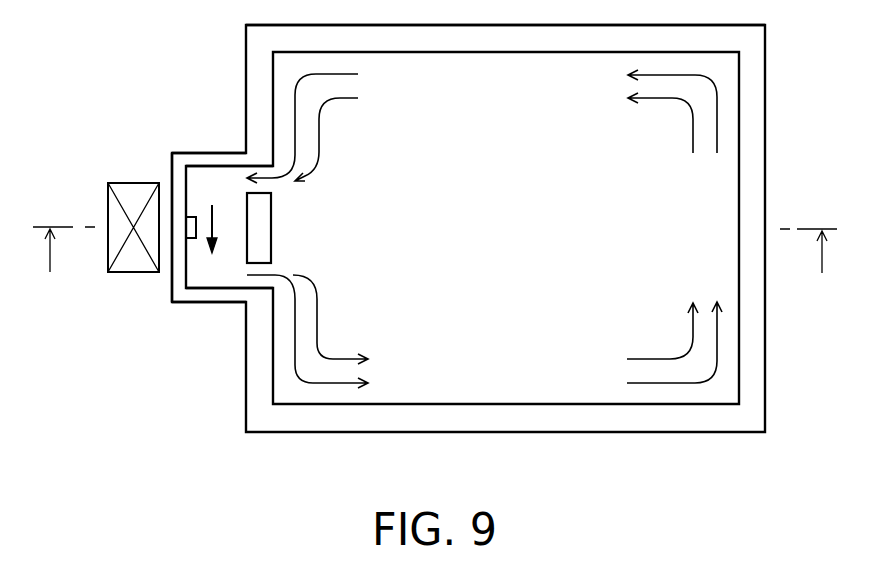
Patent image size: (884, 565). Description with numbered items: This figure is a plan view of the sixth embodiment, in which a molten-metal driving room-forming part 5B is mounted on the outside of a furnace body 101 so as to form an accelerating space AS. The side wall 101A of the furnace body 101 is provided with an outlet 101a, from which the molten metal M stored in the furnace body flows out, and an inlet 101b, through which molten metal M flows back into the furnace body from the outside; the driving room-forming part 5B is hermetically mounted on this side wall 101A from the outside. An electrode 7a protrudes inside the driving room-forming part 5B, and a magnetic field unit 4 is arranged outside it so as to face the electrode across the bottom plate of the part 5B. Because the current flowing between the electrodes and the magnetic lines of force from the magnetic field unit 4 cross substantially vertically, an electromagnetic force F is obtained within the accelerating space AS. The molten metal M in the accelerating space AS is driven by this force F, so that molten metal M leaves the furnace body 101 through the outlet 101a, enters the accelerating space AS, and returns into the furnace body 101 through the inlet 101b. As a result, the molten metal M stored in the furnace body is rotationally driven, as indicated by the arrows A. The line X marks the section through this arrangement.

The furnace body 101 is at (766, 172).
The side wall 101A is at (255, 53).
The molten-metal driving room-forming part 5B is at (203, 152).
The outlet 101a is at (252, 170).
The inlet 101b is at (255, 286).
The magnetic field unit 4 is at (108, 215).
The electrode 7a is at (187, 231).
The accelerating space AS is at (192, 286).
The electromagnetic force F is at (214, 221).
The molten metal M is at (519, 249).
The arrows A is at (325, 103).
The section line X is at (436, 250).